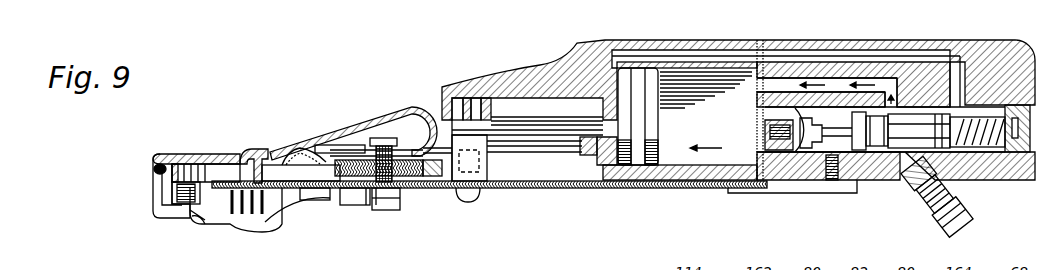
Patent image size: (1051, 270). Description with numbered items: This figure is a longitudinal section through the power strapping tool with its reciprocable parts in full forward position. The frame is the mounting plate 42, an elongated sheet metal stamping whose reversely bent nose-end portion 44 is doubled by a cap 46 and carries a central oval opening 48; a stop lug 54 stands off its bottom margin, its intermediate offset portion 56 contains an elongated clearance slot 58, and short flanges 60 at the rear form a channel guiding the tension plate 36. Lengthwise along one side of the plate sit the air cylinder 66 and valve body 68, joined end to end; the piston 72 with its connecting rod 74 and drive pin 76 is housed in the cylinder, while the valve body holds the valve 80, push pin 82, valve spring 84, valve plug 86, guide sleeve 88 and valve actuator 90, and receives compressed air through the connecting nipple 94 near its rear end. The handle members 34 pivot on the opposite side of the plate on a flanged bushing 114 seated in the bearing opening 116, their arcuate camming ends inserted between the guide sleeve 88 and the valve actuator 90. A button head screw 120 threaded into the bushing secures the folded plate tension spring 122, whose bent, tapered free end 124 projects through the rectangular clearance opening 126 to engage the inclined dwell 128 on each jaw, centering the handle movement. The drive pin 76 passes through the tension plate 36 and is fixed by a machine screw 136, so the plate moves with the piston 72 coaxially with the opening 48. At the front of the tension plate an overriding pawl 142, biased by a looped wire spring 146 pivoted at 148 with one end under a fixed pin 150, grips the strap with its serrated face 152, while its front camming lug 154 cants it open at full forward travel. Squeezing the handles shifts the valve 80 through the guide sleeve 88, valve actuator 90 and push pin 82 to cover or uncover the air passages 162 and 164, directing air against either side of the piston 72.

The handle member 34 is at (430, 180).
The tension plate 36 is at (692, 190).
The mounting plate 42 is at (633, 185).
The nose-end portion 44 is at (152, 169).
The cap 46 is at (152, 214).
The oval opening 48 is at (172, 190).
The stop lug 54 is at (372, 178).
The offset portion 56 is at (520, 150).
The clearance slot 58 is at (557, 152).
The flange 60 is at (757, 195).
The air cylinder 66 is at (525, 70).
The valve body 68 is at (985, 55).
The piston 72 is at (640, 134).
The connecting rod 74 is at (505, 97).
The drive pin 76 is at (482, 170).
The valve 80 is at (917, 128).
The push pin 82 is at (842, 130).
The valve spring 84 is at (993, 150).
The valve plug 86 is at (1013, 118).
The guide sleeve 88 is at (825, 115).
The valve actuator 90 is at (835, 138).
The connecting nipple 94 is at (930, 190).
The flanged bushing 114 is at (370, 186).
The bearing opening 116 is at (432, 142).
The button head screw 120 is at (380, 148).
The folded plate tension spring 122 is at (330, 148).
The tapered free end 124 is at (257, 152).
The clearance opening 126 is at (268, 160).
The inclined dwell 128 is at (275, 176).
The machine screw 136 is at (470, 202).
The overriding pawl 142 is at (207, 225).
The looped wire spring 146 is at (290, 204).
The spring pivot 148 is at (320, 205).
The fixed pin 150 is at (388, 210).
The serrations 152 is at (268, 228).
The front camming lug 154 is at (195, 222).
The air passage 162 is at (773, 88).
The air passage 164 is at (655, 62).